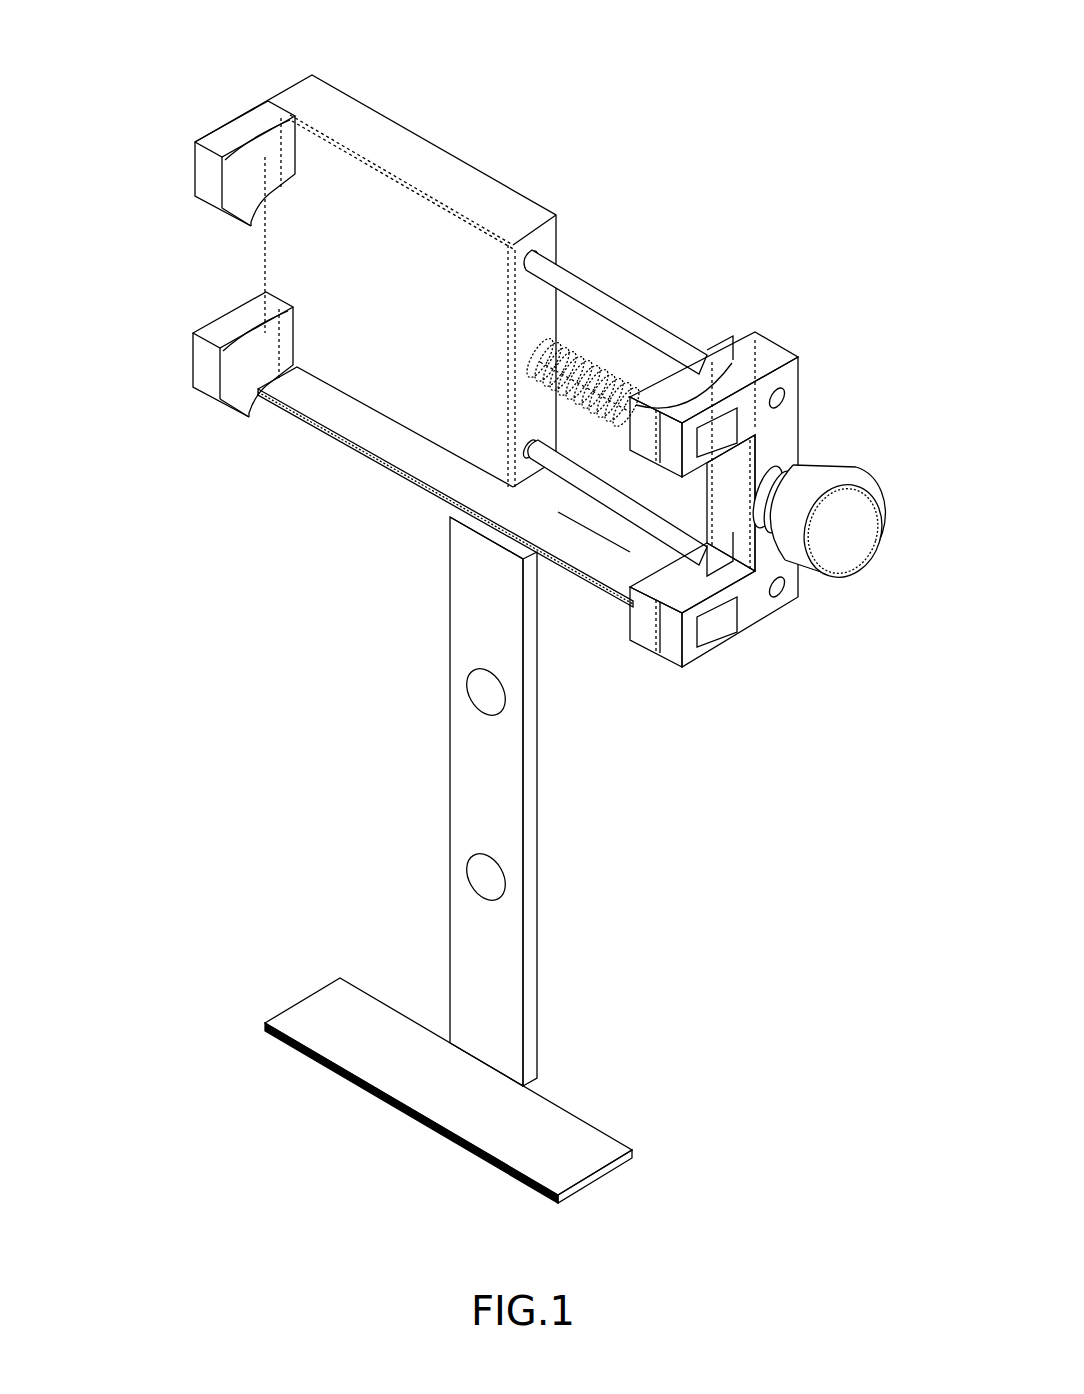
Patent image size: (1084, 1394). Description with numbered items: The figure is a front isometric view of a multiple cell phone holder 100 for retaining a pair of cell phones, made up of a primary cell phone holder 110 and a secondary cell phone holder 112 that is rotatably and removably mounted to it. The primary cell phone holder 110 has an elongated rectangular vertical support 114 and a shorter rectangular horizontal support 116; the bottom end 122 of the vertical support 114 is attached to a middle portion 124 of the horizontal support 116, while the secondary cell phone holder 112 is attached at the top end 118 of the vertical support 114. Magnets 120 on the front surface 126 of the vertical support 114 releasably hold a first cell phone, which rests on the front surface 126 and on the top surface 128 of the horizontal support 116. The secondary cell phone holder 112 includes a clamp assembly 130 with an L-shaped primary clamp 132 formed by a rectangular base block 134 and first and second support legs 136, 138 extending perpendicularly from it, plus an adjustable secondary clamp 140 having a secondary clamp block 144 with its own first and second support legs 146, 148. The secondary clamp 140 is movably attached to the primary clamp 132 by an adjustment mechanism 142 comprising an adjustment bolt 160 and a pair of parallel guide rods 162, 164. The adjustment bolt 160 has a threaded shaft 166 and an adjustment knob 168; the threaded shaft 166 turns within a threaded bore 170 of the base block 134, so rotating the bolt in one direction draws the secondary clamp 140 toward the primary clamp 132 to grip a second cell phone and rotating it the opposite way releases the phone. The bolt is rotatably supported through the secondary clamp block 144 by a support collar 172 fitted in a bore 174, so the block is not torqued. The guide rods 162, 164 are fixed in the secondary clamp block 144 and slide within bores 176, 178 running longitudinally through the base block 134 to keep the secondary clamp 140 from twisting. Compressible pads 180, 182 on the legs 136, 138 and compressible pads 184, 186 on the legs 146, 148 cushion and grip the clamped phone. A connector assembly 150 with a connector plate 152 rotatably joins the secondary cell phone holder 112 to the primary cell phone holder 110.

The multiple cell phone holder 100 is at (147, 45).
The primary cell phone holder 110 is at (348, 762).
The secondary cell phone holder 112 is at (135, 265).
The vertical support 114 is at (540, 878).
The horizontal support 116 is at (397, 1118).
The top end 118 is at (455, 535).
The magnets 120 is at (480, 693).
The bottom end 122 is at (535, 1078).
The middle portion 124 is at (483, 1067).
The front surface 126 is at (487, 935).
The top surface 128 is at (527, 1133).
The clamp assembly 130 is at (703, 190).
The primary clamp 132 is at (353, 68).
The base block 134 is at (412, 157).
The first support leg 136 is at (232, 125).
The second support leg 138 is at (217, 328).
The adjustable secondary clamp 140 is at (823, 622).
The adjustment mechanism 142 is at (685, 300).
The secondary clamp block 144 is at (770, 353).
The first support leg 146 is at (692, 400).
The second support leg 148 is at (672, 650).
The connector assembly 150 is at (333, 502).
The connector plate 152 is at (343, 410).
The adjustment bolt 160 is at (873, 470).
The guide rod 162 is at (568, 277).
The guide rod 164 is at (590, 482).
The threaded shaft 166 is at (592, 367).
The adjustment knob 168 is at (853, 540).
The threaded bore 170 is at (523, 345).
The support collar 172 is at (787, 477).
The bore 174 is at (770, 465).
The bore 176 is at (558, 235).
The bore 178 is at (525, 440).
The compressible pad 180 is at (232, 207).
The compressible pad 182 is at (230, 397).
The compressible pad 184 is at (635, 432).
The compressible pad 186 is at (642, 628).